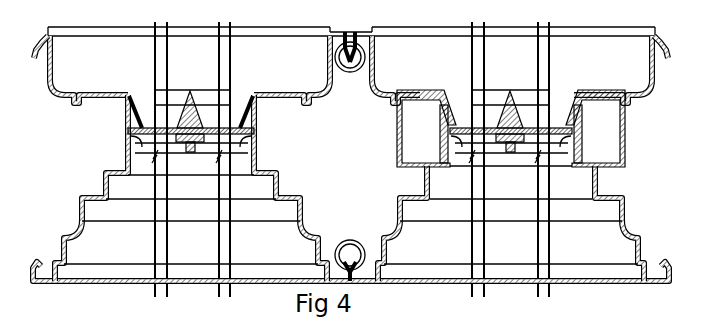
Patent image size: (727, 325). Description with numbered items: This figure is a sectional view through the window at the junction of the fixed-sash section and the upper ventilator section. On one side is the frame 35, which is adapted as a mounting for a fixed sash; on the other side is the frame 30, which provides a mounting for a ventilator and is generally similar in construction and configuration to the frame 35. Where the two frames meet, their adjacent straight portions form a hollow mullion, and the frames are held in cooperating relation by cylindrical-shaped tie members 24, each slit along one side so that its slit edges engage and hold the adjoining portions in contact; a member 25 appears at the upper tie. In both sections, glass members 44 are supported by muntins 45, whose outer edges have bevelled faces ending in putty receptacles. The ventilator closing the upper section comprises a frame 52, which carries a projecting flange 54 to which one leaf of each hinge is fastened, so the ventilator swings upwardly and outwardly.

The cylindrical-shaped member 24 is at (351, 72).
The yoke 25 is at (352, 32).
The frame 30 is at (515, 205).
The frame 35 is at (191, 188).
The glass member 44 is at (147, 128).
The muntin 45 is at (190, 91).
The frame 52 is at (445, 115).
The projecting flange 54 is at (418, 95).